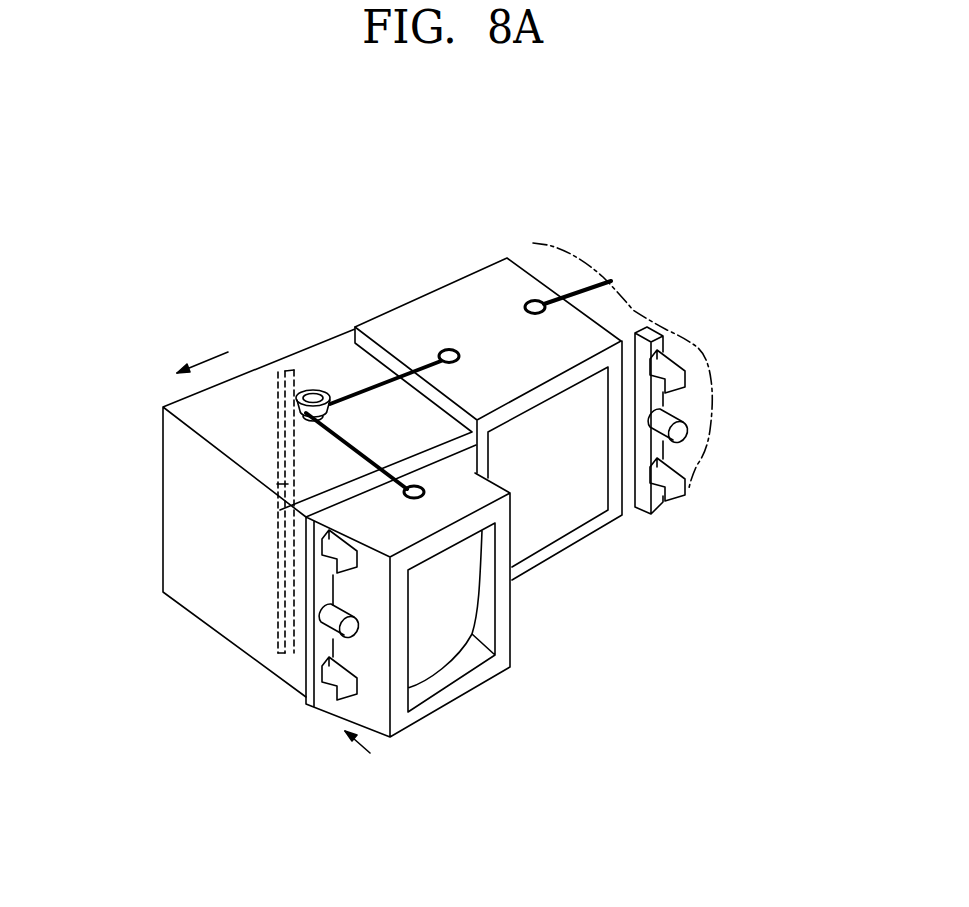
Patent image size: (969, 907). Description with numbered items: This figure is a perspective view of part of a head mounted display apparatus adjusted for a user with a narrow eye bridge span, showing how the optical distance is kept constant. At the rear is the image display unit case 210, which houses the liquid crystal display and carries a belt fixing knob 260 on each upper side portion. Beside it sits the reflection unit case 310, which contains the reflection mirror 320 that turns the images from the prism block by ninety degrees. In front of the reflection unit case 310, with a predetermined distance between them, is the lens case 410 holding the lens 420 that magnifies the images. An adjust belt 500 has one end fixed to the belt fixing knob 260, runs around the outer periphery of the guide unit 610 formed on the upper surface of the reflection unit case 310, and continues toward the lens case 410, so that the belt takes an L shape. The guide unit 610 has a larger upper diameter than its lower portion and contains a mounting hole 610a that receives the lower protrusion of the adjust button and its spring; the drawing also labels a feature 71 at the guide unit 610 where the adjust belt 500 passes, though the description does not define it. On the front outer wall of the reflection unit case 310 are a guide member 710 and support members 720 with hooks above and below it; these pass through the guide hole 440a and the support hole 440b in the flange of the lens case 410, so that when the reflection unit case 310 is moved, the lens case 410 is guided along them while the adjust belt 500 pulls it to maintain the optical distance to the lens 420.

The image display unit case 210 is at (563, 523).
The belt fixing knob 260 is at (533, 300).
The reflection unit case 310 is at (187, 611).
The reflection mirror 320 is at (277, 497).
The lens case 410 is at (755, 475).
The lens 420 is at (438, 662).
The guide hole 440a is at (322, 622).
The support hole 440b is at (312, 697).
The adjust belt 500 is at (575, 290).
The guide unit 610 is at (312, 393).
The mounting hole 610a is at (303, 392).
The rod hole 71 is at (333, 411).
The guide member 710 is at (322, 628).
The support member 720 is at (323, 560).